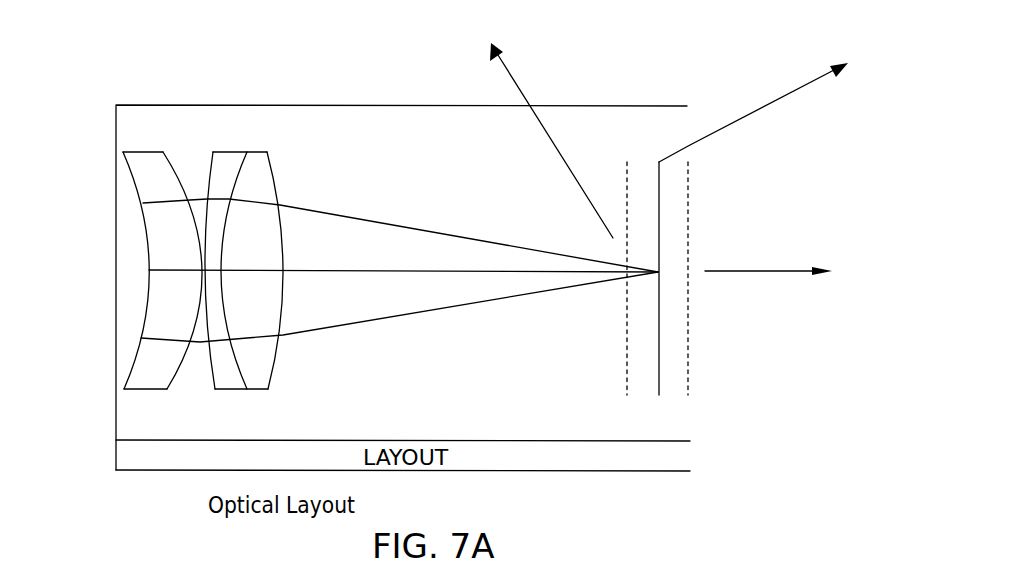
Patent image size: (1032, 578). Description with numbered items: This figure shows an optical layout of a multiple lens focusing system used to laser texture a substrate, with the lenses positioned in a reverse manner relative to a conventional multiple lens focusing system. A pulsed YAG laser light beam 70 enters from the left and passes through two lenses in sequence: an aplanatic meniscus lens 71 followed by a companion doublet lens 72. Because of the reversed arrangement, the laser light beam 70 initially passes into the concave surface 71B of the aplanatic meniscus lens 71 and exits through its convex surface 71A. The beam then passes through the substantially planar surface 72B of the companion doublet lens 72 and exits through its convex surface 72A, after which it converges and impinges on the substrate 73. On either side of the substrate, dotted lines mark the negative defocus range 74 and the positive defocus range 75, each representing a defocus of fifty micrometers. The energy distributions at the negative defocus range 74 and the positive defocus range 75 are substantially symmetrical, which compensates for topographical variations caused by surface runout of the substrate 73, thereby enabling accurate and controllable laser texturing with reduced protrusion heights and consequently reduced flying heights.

The pulsed YAG laser light beam 70 is at (465, 305).
The aplanatic meniscus lens 71 is at (128, 239).
The convex surface 71A is at (178, 165).
The concave surface 71B is at (135, 182).
The companion doublet lens 72 is at (278, 240).
The convex surface 72A is at (274, 174).
The substantially planar surface 72B is at (208, 165).
The substrate 73 is at (766, 100).
The negative defocus range 74 is at (541, 129).
The positive defocus range 75 is at (784, 276).